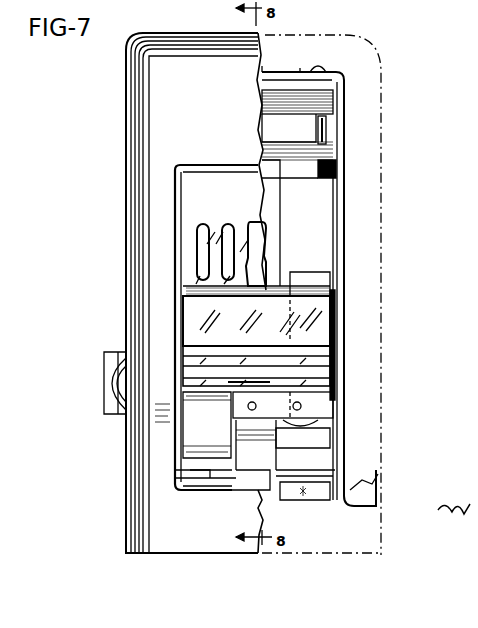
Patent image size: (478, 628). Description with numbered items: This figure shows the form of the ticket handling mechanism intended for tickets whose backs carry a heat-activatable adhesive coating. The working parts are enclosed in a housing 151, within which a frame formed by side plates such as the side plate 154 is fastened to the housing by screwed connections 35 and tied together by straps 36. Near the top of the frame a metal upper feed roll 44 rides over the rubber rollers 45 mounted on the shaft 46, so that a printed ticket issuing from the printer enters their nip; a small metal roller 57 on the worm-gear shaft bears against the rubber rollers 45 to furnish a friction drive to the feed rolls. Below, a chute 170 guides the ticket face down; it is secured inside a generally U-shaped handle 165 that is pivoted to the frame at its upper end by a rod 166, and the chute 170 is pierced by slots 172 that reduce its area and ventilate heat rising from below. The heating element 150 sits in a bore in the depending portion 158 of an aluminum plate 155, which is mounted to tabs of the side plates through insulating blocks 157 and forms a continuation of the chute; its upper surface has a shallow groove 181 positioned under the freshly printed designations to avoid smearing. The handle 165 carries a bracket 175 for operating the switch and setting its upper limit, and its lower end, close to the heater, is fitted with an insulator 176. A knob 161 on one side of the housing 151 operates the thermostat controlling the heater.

The housing 151 is at (162, 110).
The operating knob 161 is at (110, 383).
The chute 170 is at (187, 207).
The slots 172 is at (230, 255).
The rod 166 is at (277, 160).
The bracket 175 is at (258, 243).
The plate 155 is at (188, 328).
The shallow groove 181 is at (322, 365).
The handle 165 is at (322, 402).
The insulator 176 is at (190, 433).
The insulating blocks 157 is at (322, 441).
The depending portion 158 is at (247, 480).
The heating element 150 is at (268, 500).
The straps 36 is at (292, 70).
The side plate 154 is at (340, 222).
The upper feed roll 44 is at (333, 94).
The rubber rollers 45 is at (335, 125).
The shaft 46 is at (278, 130).
The metal roller 57 is at (330, 170).
The screwed connections 35 is at (376, 478).